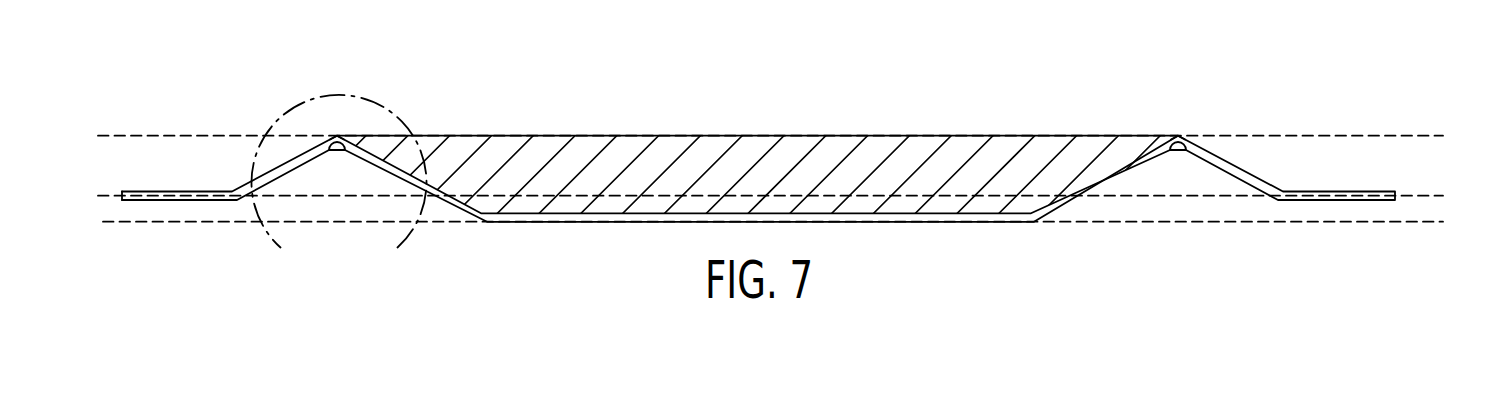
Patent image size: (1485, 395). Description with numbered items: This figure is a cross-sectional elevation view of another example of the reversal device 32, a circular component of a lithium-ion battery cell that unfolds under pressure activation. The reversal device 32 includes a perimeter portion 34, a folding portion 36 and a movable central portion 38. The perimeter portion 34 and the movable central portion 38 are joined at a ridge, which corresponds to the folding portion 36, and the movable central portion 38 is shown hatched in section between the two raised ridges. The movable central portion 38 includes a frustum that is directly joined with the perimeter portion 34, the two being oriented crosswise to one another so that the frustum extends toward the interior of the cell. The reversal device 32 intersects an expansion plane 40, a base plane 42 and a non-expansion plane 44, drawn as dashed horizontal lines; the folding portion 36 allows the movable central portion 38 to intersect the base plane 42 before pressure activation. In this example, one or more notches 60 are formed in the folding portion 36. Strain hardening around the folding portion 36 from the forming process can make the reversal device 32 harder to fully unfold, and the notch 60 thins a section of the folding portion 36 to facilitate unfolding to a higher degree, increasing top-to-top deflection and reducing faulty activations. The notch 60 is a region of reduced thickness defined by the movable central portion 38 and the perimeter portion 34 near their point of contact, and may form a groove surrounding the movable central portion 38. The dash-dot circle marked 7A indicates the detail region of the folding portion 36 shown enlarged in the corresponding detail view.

The reversal device 32 is at (758, 168).
The perimeter portion 34 is at (1137, 180).
The folding portion 36 is at (336, 130).
The movable central portion 38 is at (907, 155).
The expansion plane 40 is at (1400, 135).
The base plane 42 is at (1415, 194).
The non-expansion plane 44 is at (1405, 224).
The notch 60 is at (1178, 152).
The section view 7A indicator 7A is at (280, 248).